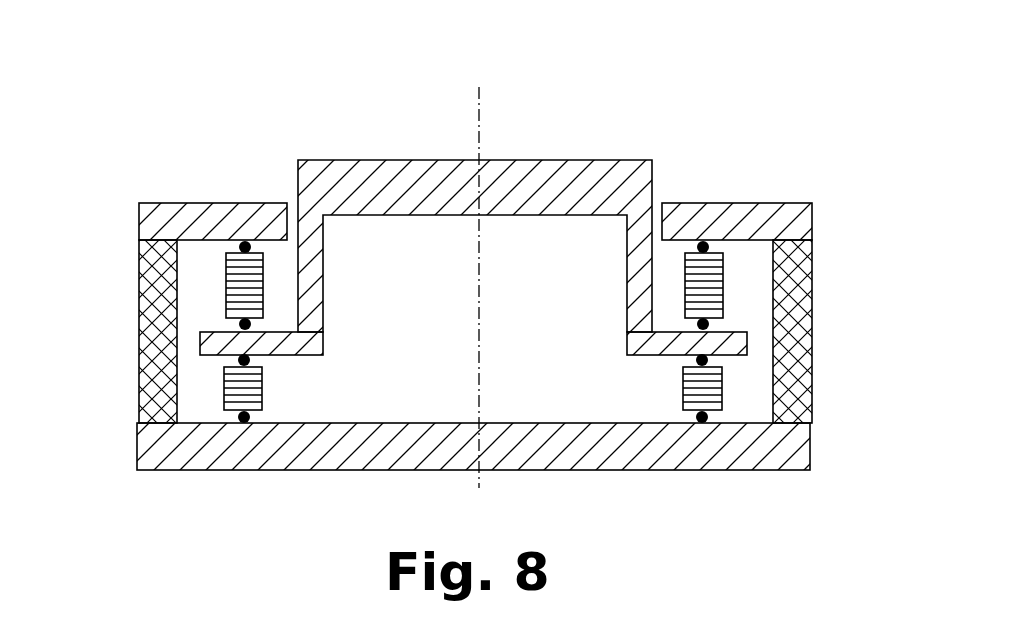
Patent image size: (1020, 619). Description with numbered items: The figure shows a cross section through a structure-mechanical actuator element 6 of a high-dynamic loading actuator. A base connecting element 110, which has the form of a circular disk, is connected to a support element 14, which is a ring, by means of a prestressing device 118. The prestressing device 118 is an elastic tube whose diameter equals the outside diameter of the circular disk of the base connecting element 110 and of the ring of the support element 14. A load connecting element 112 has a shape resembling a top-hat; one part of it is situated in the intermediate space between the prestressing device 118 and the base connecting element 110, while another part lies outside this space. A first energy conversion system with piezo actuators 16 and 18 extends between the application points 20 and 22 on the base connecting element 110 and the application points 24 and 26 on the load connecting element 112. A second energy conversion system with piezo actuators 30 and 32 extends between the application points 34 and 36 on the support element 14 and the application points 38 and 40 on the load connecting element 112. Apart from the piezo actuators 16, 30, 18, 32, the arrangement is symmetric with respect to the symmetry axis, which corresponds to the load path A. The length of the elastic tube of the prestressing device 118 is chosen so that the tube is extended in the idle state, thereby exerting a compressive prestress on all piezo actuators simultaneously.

The actuator element 6 is at (676, 112).
The support element 14 is at (185, 222).
The piezo actuator 16 is at (232, 390).
The piezo actuator 18 is at (714, 390).
The application point 20 is at (245, 423).
The application point 22 is at (701, 423).
The application point 24 is at (250, 362).
The application point 26 is at (697, 362).
The piezo actuator 30 is at (240, 290).
The piezo actuator 32 is at (705, 287).
The application point 34 is at (245, 241).
The application point 36 is at (703, 241).
The application point 38 is at (251, 322).
The application point 40 is at (697, 322).
The base connecting element 110 is at (593, 440).
The load connecting element 112 is at (385, 175).
The prestressing device 118 is at (150, 327).
The load path A is at (482, 100).